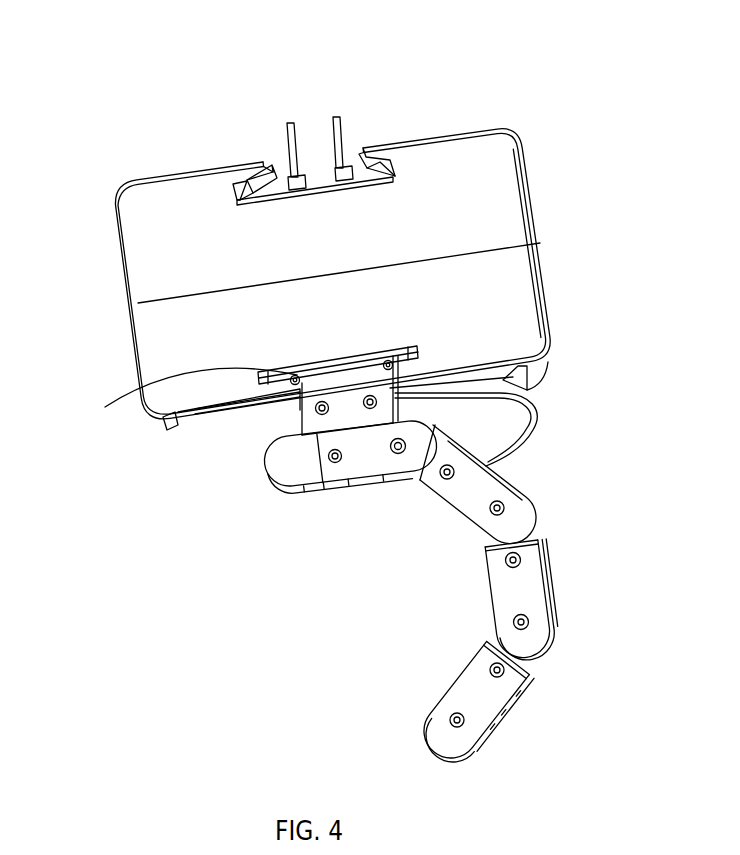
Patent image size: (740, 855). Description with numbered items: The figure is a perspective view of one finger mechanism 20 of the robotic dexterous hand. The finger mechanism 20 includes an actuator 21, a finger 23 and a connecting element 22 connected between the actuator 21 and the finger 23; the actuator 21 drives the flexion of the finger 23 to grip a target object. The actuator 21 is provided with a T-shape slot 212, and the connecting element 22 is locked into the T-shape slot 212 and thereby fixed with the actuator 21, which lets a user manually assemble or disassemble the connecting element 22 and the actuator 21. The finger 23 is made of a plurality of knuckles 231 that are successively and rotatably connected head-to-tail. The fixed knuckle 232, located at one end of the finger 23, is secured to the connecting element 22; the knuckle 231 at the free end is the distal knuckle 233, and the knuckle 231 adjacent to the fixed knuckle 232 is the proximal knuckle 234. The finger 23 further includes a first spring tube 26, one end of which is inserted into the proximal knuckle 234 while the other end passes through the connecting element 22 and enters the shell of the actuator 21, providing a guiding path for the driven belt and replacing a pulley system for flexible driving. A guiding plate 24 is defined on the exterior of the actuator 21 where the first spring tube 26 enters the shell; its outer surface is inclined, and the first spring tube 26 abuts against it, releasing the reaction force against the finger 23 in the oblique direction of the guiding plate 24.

The finger mechanism 20 is at (348, 33).
The actuator 21 is at (507, 273).
The T-shape slot 212 is at (165, 378).
The connecting element 22 is at (177, 425).
The finger 23 is at (428, 567).
The knuckle 231 is at (518, 588).
The fixed knuckle 232 is at (297, 470).
The distal knuckle 233 is at (473, 708).
The proximal knuckle 234 is at (487, 494).
The guiding plate 24 is at (503, 381).
The first spring tube 26 is at (533, 419).